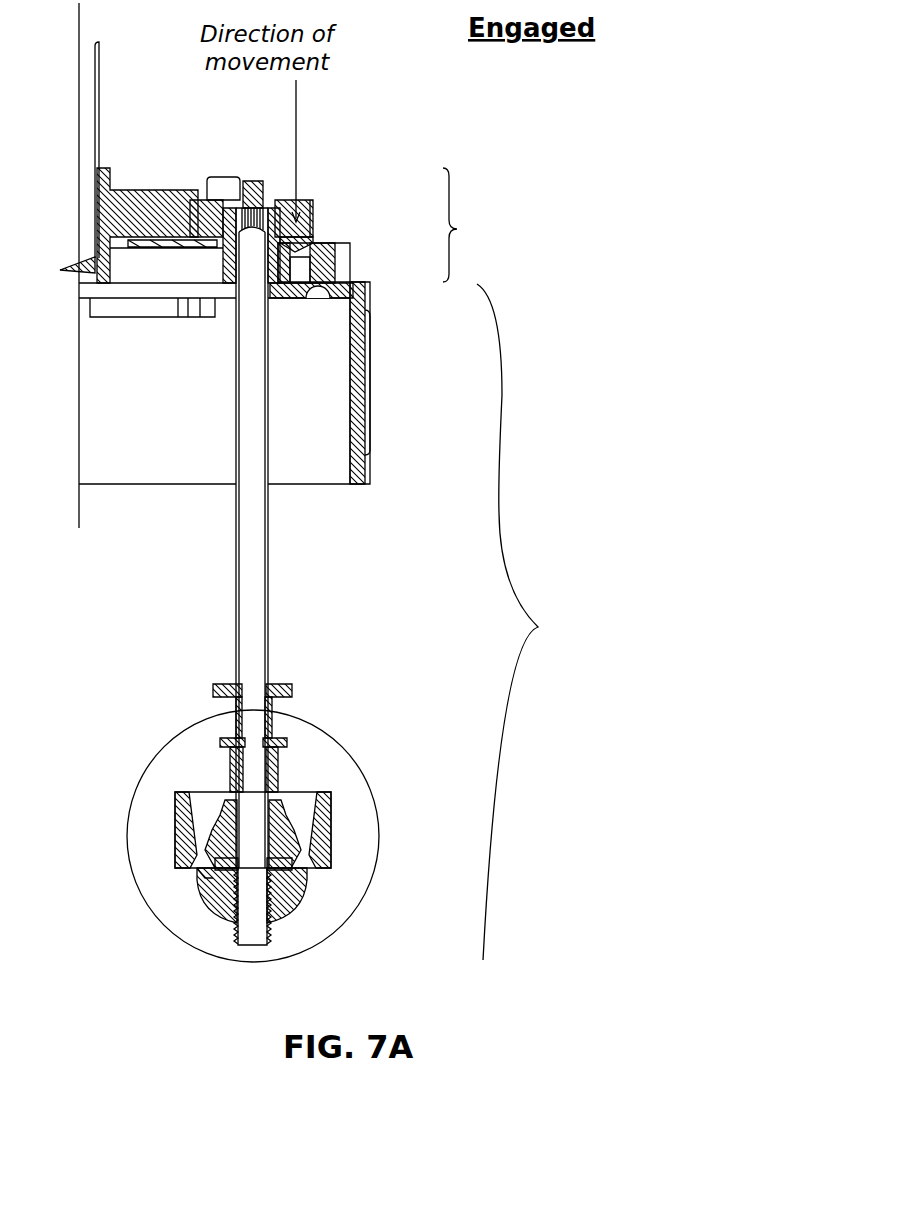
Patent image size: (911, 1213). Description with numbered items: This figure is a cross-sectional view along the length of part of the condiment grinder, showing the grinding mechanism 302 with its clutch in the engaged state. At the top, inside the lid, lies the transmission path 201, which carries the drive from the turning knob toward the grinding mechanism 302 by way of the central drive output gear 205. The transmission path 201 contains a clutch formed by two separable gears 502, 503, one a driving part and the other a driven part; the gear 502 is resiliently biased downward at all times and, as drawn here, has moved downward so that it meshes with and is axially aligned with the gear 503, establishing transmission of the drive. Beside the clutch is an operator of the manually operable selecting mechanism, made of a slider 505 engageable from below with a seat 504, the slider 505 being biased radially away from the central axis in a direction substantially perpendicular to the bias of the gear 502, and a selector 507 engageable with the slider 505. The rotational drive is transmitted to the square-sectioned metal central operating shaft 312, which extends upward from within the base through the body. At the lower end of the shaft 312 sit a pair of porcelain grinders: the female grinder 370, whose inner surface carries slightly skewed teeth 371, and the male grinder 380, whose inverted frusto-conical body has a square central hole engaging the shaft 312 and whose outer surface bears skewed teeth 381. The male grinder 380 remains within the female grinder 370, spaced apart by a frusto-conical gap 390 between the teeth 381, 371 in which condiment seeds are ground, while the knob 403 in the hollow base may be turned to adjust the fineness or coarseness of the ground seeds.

The transmission path 201 is at (474, 225).
The central drive output gear 205 is at (133, 202).
The grinding mechanism 302 is at (532, 622).
The central operating shaft 312 is at (248, 586).
The female grinder 370 is at (330, 862).
The teeth 371 is at (330, 833).
The male grinder 380 is at (292, 793).
The teeth 381 is at (198, 878).
The frusto-conical gap 390 is at (201, 822).
The knob 403 is at (295, 907).
The gear 502 is at (314, 213).
The gear 503 is at (302, 200).
The seat 504 is at (311, 240).
The slider 505 is at (325, 270).
The selector 507 is at (355, 365).